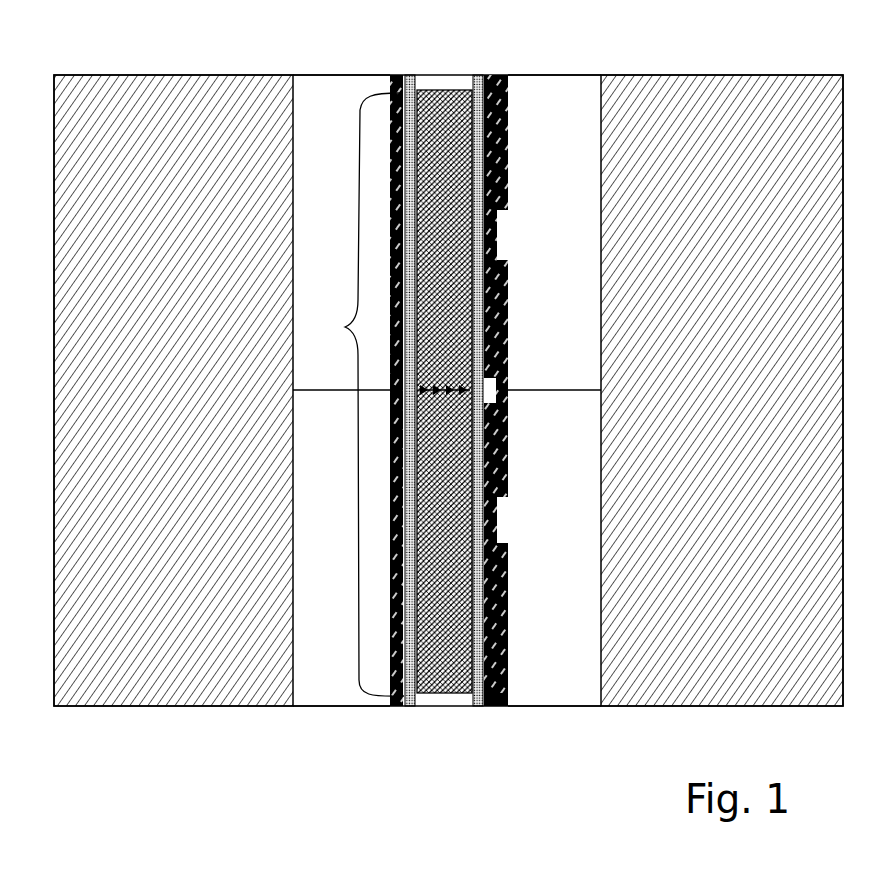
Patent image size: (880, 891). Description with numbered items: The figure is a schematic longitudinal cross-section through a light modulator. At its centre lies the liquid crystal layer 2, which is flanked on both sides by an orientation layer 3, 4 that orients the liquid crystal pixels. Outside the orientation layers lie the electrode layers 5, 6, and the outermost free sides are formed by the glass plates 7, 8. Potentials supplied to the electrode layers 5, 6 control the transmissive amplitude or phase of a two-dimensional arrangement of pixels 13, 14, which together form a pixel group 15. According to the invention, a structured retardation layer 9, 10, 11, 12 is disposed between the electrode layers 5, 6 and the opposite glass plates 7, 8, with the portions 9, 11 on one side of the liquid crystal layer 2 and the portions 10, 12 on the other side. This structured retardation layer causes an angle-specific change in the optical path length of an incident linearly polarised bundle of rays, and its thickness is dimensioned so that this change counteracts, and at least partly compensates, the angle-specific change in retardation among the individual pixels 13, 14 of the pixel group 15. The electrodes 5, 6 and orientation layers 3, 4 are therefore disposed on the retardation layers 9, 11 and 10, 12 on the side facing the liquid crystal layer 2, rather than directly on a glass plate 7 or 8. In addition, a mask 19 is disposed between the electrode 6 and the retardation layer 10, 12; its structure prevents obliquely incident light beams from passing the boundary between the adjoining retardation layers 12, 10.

The liquid crystal layer 2 is at (438, 91).
The orientation layer 3 is at (411, 706).
The orientation layer 4 is at (480, 706).
The electrode layer 5 is at (403, 75).
The electrode layer 6 is at (497, 75).
The glass plate 7 is at (253, 93).
The glass plate 8 is at (623, 93).
The structured retardation layer 9 is at (350, 254).
The structured retardation layer 10 is at (563, 254).
The structured retardation layer 11 is at (350, 569).
The structured retardation layer 12 is at (565, 569).
The pixel 13 is at (463, 197).
The pixel 14 is at (463, 513).
The pixel group 15 is at (345, 327).
The mask 19 is at (503, 706).